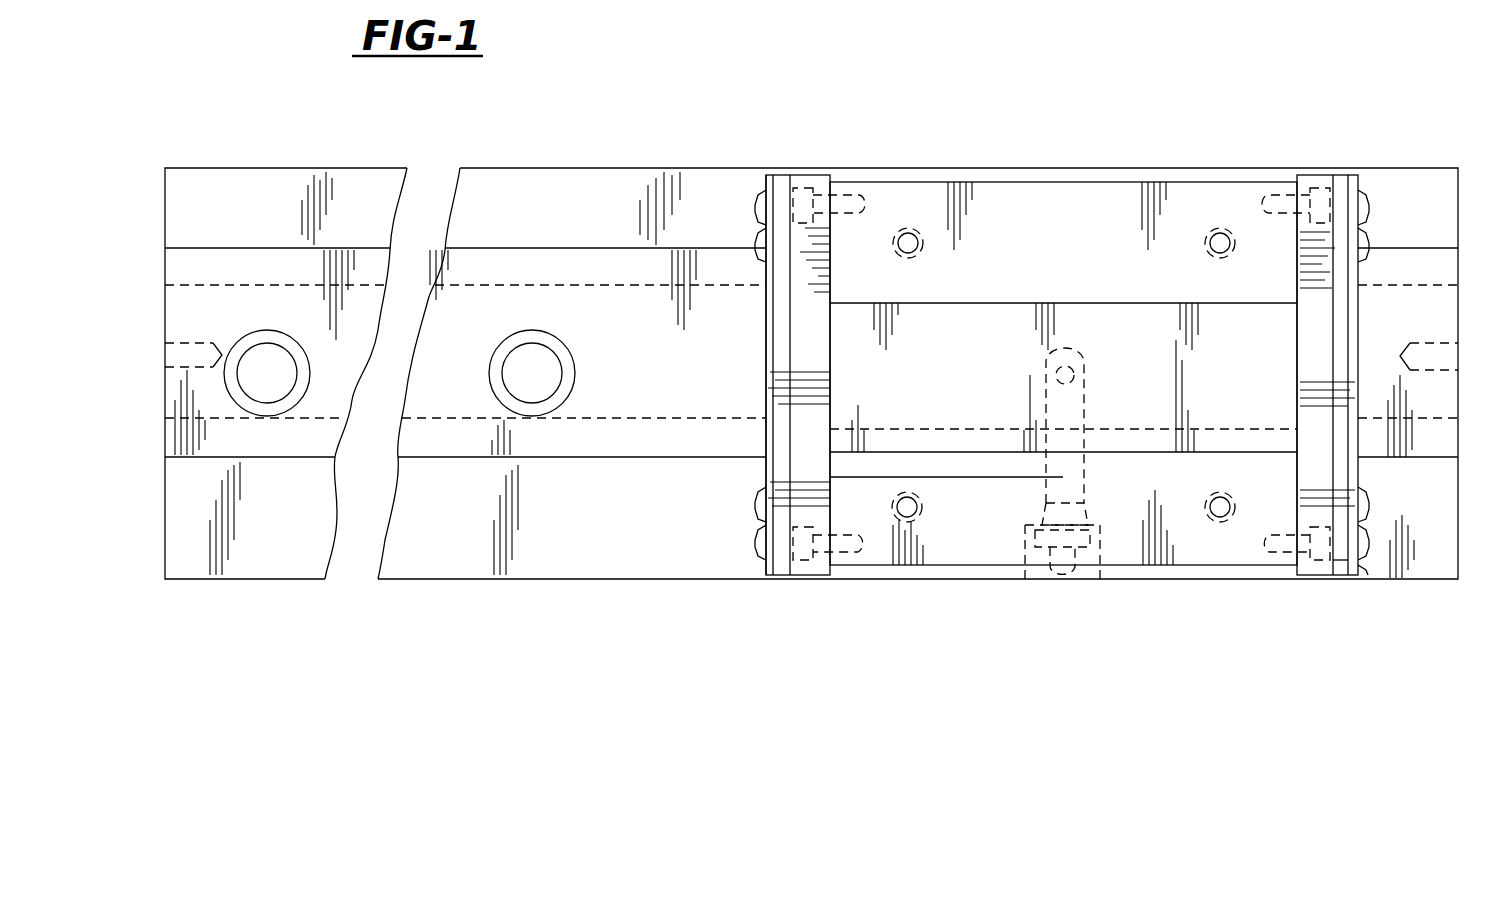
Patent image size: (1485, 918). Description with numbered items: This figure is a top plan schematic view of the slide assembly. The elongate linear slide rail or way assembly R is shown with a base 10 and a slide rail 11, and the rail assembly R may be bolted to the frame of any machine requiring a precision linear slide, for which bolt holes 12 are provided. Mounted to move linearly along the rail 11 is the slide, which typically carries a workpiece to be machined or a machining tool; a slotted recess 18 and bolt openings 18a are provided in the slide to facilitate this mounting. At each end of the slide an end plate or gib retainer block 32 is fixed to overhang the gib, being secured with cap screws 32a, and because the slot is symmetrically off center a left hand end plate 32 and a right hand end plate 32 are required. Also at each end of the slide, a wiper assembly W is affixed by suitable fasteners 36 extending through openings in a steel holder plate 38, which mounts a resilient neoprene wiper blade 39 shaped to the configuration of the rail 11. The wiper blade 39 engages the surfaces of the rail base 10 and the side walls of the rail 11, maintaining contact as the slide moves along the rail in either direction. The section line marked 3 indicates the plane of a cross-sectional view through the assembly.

The slide rail or way assembly R is at (645, 168).
The wiper assembly W is at (760, 266).
The base 10 is at (488, 190).
The slide rail 11 is at (288, 190).
The bolt holes 12 is at (576, 340).
The slotted recess 18 is at (1030, 300).
The bolt openings 18a is at (920, 233).
The end plate or gib retainer block 32 is at (1310, 500).
The cap screws 32a is at (808, 190).
The fasteners 36 is at (1360, 195).
The steel holder plate 38 is at (1368, 573).
The wiper blade 39 is at (1342, 566).
The section line 3- 3 is at (1063, 482).